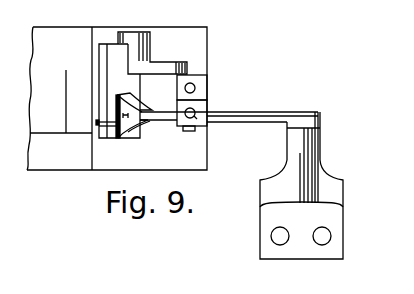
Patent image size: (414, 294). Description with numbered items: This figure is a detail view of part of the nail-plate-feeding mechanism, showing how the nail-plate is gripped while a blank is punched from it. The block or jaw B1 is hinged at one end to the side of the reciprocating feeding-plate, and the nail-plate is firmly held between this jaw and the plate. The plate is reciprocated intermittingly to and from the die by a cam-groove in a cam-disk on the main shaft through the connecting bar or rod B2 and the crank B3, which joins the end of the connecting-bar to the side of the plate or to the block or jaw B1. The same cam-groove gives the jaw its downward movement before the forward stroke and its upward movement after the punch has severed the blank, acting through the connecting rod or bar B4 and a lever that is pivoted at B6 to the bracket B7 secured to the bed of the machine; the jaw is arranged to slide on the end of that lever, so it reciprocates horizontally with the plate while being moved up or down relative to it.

The block or jaw B1 is at (124, 91).
The connecting bar or rod B2 is at (207, 77).
The crank B3 is at (155, 65).
The connecting rod or bar B4 is at (196, 129).
The pivot B6 is at (294, 108).
The bracket B7 is at (322, 173).